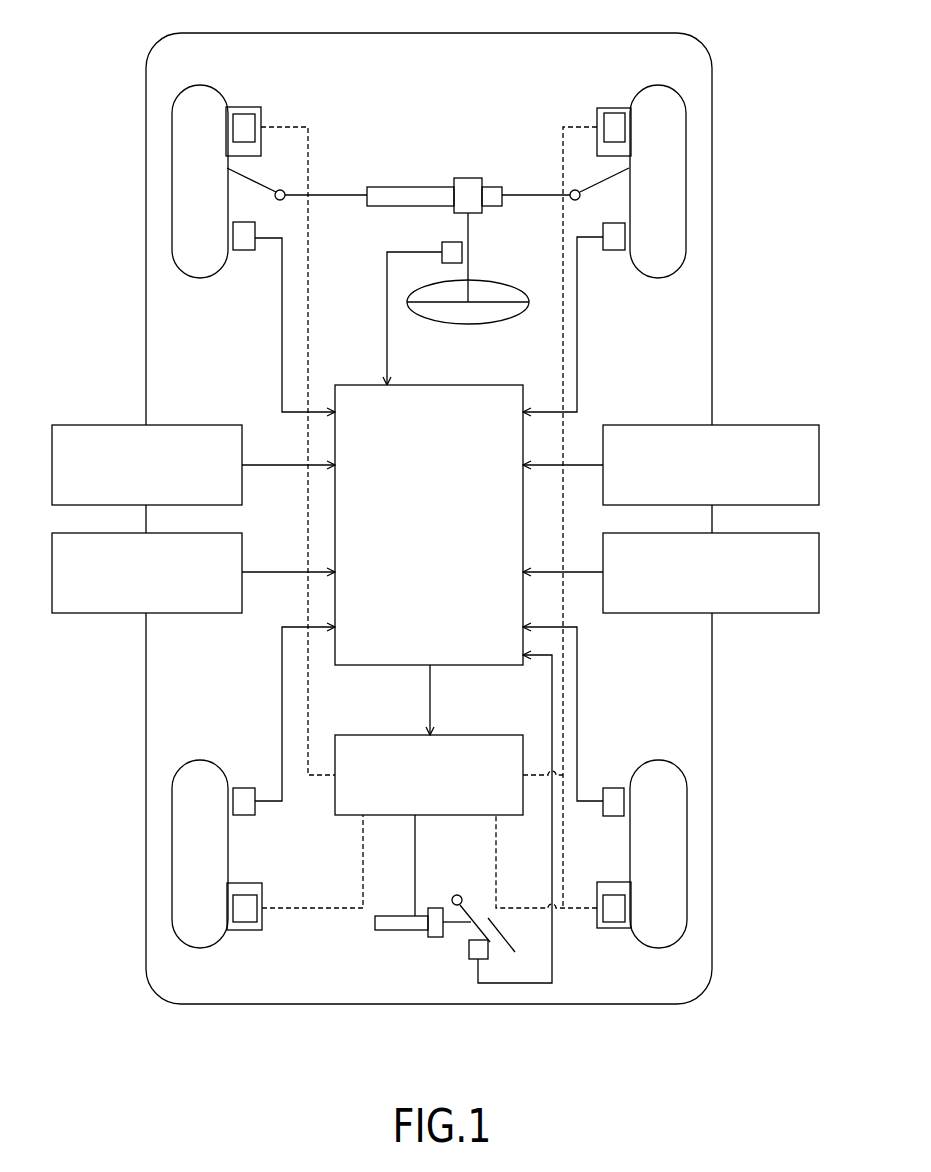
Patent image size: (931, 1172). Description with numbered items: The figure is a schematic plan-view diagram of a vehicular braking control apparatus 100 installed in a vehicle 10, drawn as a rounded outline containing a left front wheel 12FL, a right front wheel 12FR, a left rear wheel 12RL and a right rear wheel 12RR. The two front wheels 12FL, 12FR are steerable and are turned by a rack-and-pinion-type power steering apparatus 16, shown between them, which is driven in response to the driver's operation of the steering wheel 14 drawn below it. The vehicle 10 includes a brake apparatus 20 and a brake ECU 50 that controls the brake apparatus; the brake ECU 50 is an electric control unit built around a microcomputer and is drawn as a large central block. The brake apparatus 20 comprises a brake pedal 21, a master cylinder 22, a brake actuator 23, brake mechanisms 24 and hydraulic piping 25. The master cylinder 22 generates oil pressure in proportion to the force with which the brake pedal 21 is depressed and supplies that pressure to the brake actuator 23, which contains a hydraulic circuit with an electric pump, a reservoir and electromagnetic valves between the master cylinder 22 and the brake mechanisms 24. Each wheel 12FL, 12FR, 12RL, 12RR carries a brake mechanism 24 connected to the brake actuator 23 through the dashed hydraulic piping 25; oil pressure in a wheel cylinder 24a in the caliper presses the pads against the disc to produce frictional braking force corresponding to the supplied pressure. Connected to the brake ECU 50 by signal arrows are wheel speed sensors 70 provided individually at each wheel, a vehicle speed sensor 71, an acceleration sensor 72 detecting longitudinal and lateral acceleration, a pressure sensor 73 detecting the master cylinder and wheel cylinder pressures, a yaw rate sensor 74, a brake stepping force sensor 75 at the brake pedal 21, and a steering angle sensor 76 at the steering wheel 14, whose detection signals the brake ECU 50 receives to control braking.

The vehicular braking control apparatus 100 is at (727, 126).
The vehicle 10 is at (712, 357).
The left front wheel 12FL is at (172, 193).
The right front wheel 12FR is at (686, 193).
The left rear wheel 12RL is at (172, 863).
The right rear wheel 12RR is at (687, 863).
The steering wheel 14 is at (463, 324).
The power steering apparatus 16 is at (461, 170).
The brake apparatus 20 is at (362, 939).
The brake pedal 21 is at (513, 943).
The master cylinder 22 is at (392, 931).
The brake actuator 23 is at (470, 735).
The brake mechanism 24 is at (237, 107).
The wheel cylinder 24a is at (253, 109).
The hydraulic piping 25 is at (310, 252).
The brake ECU 50 is at (434, 385).
The wheel speed sensor 70 is at (242, 251).
The vehicle speed sensor 71 is at (658, 425).
The acceleration sensor 72 is at (655, 614).
The pressure sensor 73 is at (202, 425).
The yaw rate sensor 74 is at (199, 614).
The brake stepping force sensor 75 is at (473, 959).
The steering angle sensor 76 is at (447, 241).